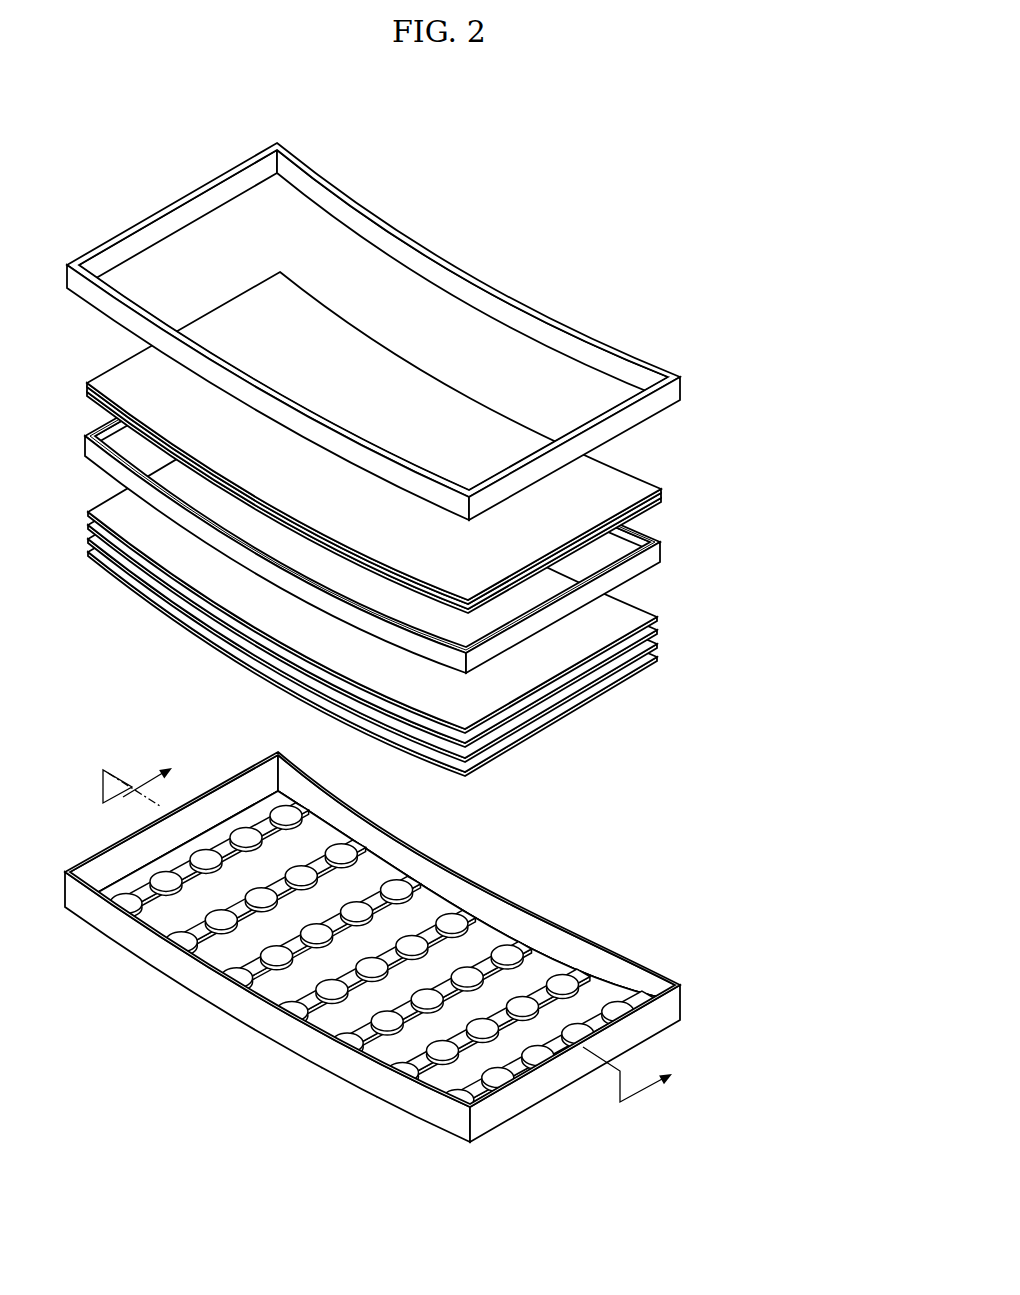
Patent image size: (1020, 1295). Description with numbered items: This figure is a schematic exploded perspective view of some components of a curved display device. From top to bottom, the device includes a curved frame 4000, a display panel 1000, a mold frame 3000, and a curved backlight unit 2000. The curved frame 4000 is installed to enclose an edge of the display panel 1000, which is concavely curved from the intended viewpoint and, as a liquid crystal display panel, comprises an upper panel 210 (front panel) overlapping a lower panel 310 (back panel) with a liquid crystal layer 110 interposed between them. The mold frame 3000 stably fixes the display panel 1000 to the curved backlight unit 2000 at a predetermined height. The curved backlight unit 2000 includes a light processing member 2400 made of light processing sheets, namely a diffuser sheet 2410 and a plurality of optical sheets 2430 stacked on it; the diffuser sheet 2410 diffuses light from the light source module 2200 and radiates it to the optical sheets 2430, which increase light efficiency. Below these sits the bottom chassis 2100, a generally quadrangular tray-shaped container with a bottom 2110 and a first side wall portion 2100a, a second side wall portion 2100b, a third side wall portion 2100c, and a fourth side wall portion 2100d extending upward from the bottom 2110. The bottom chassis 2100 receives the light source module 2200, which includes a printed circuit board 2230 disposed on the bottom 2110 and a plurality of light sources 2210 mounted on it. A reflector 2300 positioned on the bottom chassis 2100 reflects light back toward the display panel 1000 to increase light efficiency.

The curved frame 4000 is at (683, 386).
The display panel 1000 is at (442, 442).
The upper panel 210 is at (662, 490).
The liquid crystal layer 110 is at (662, 496).
The lower panel 310 is at (662, 503).
The mold frame 3000 is at (662, 552).
The curved backlight unit 2000 is at (437, 771).
The light processing member 2400 is at (444, 606).
The optical sheet 2430 is at (658, 619).
The diffuser sheet 2410 is at (658, 659).
The reflector 2300 is at (312, 838).
The light source module 2200 is at (412, 932).
The light source 2210 is at (270, 1000).
The printed circuit board 2230 is at (288, 1003).
The bottom chassis 2100 is at (437, 917).
The first side wall portion 2100a is at (185, 972).
The second side wall portion 2100b is at (470, 893).
The third side wall portion 2100c is at (250, 782).
The fourth side wall portion 2100d is at (683, 1004).
The bottom 2110 is at (472, 953).